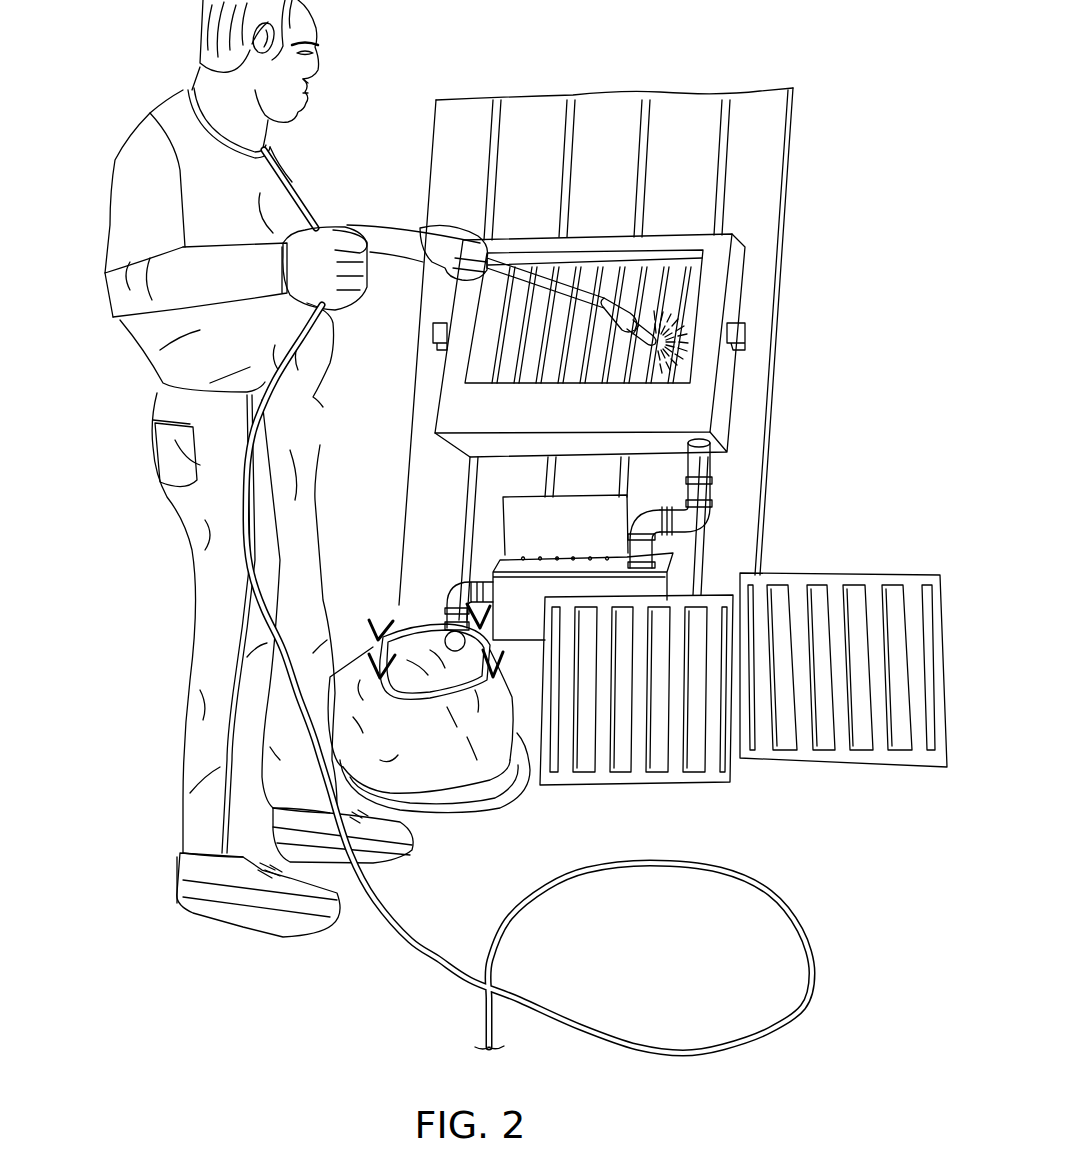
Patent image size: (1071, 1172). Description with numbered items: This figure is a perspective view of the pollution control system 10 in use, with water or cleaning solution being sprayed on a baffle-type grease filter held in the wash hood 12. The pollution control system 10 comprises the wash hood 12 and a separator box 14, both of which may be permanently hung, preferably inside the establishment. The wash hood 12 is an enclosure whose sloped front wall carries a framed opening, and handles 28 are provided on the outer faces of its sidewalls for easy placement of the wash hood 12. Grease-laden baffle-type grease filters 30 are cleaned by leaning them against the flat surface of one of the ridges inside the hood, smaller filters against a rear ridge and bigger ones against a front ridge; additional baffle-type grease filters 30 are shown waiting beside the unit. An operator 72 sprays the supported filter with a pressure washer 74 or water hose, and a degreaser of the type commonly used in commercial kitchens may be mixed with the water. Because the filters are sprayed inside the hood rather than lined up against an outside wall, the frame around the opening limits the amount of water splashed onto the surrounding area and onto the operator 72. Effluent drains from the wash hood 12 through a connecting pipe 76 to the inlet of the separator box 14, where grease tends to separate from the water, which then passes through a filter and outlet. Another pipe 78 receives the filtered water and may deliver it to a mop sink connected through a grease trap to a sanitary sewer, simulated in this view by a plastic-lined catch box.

The pollution control system 10 is at (857, 65).
The wash hood 12 is at (746, 263).
The separator box 14 is at (678, 568).
The handles 28 is at (432, 334).
The baffle-type grease filters 30 is at (660, 277).
The operator 72 is at (112, 195).
The pressure washer 74 is at (615, 298).
The drain piping 76 is at (707, 490).
The pipe 78 is at (443, 588).